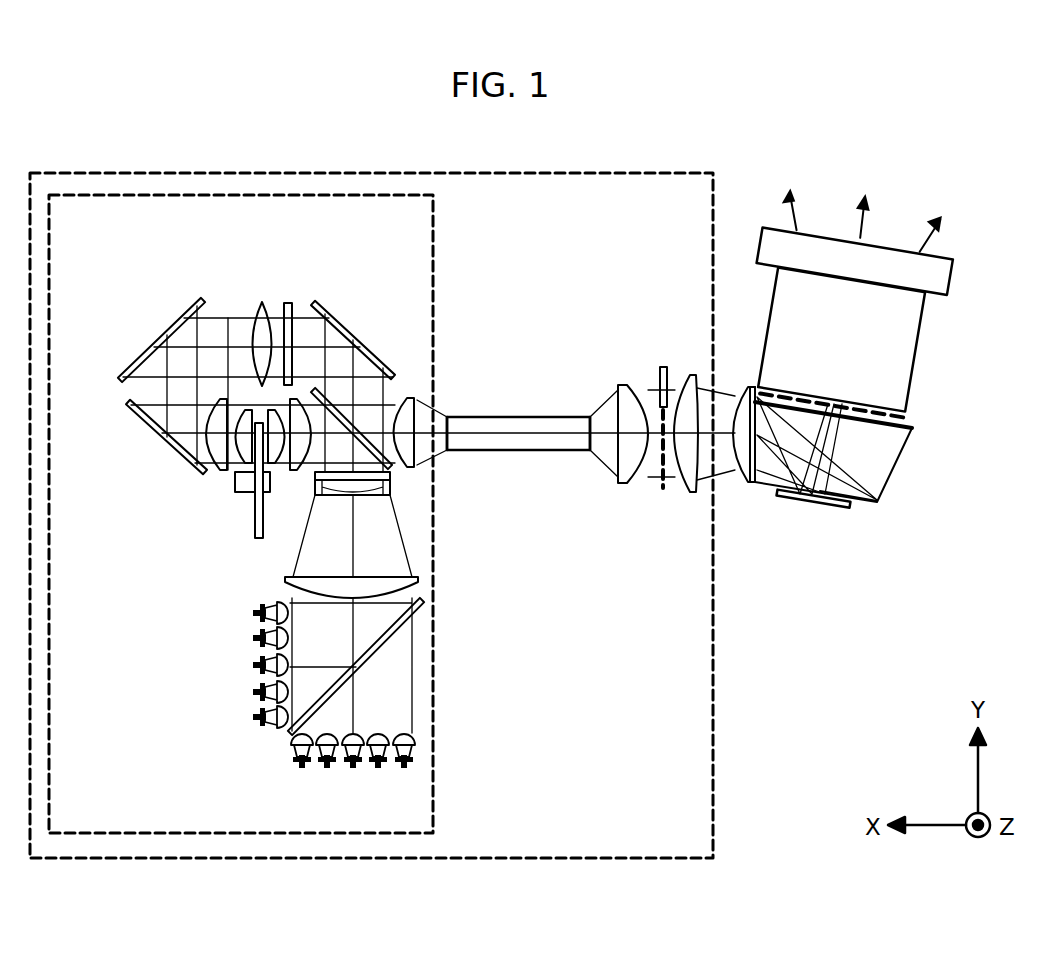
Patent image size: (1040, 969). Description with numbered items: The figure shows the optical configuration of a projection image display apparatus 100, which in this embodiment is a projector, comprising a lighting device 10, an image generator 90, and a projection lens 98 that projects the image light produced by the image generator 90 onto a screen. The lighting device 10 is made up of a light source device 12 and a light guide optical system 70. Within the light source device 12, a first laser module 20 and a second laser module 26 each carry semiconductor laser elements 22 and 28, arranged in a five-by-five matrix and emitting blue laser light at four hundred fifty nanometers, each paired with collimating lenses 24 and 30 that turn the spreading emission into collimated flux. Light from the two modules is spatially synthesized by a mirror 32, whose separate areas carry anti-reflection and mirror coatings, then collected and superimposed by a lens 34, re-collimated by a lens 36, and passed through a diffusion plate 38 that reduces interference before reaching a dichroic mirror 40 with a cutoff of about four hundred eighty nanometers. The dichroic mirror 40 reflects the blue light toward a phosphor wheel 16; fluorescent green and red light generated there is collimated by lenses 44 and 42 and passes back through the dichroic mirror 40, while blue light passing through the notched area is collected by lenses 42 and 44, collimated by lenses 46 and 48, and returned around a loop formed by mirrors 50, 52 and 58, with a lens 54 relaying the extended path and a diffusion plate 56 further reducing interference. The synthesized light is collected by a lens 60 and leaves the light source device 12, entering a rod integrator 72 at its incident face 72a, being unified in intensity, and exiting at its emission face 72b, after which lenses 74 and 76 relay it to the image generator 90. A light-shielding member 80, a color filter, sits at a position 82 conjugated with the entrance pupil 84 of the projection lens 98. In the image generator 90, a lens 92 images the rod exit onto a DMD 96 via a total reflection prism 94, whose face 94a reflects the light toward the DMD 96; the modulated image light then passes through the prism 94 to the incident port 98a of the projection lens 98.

The lighting device 10 is at (648, 173).
The light source device 12 is at (395, 195).
The phosphor wheel 16 is at (255, 515).
The first laser module 20 is at (413, 750).
The semiconductor laser element 22 is at (390, 770).
The collimating lens 24 is at (415, 743).
The second laser module 26 is at (220, 697).
The semiconductor laser element 28 is at (255, 722).
The collimating lens 30 is at (280, 730).
The mirror 32 is at (423, 602).
The lens 34 is at (287, 578).
The lens 36 is at (390, 488).
The diffusion plate 38 is at (390, 474).
The dichroic mirror 40 is at (392, 466).
The lens 42 is at (292, 472).
The lens 44 is at (270, 463).
The lens 46 is at (240, 457).
The lens 48 is at (222, 467).
The mirror 50 is at (142, 424).
The mirror 52 is at (178, 322).
The lens 54 is at (259, 305).
The diffusion plate 56 is at (290, 303).
The mirror 58 is at (345, 333).
The lens 60 is at (413, 398).
The light guide optical system 70 is at (571, 465).
The rod integrator 72 is at (525, 428).
The incident face 72a is at (445, 418).
The emission face 72b is at (588, 417).
The lens 74 is at (625, 478).
The lens 76 is at (680, 460).
The light-shielding member 80 is at (665, 367).
The position 82 is at (660, 417).
The entrance pupil 84 is at (907, 420).
The image generator 90 is at (870, 407).
The lens 92 is at (743, 484).
The total reflection prism 94 is at (893, 447).
The face 94a is at (877, 500).
The DMD 96 is at (817, 502).
The projection lens 98 is at (920, 327).
The incident port 98a is at (883, 407).
The projection image display apparatus 100 is at (862, 147).